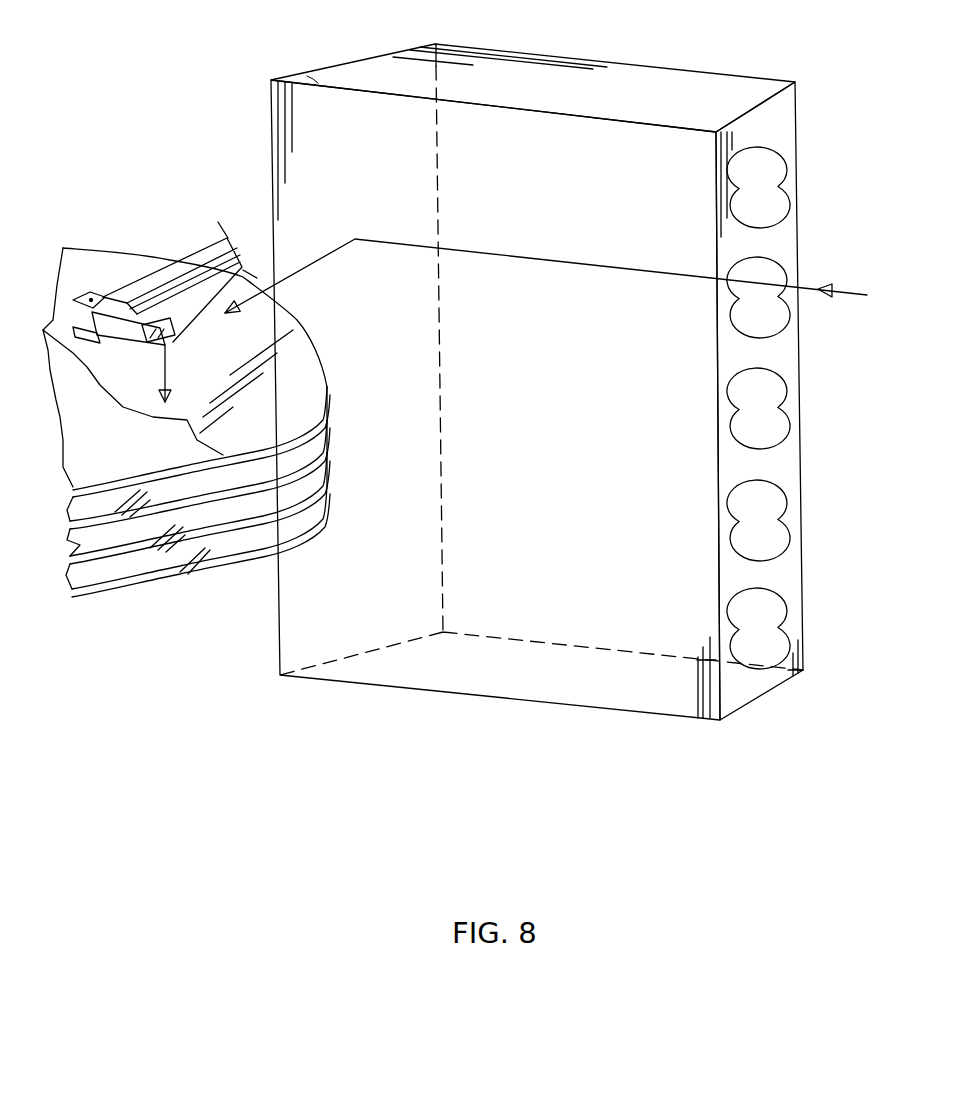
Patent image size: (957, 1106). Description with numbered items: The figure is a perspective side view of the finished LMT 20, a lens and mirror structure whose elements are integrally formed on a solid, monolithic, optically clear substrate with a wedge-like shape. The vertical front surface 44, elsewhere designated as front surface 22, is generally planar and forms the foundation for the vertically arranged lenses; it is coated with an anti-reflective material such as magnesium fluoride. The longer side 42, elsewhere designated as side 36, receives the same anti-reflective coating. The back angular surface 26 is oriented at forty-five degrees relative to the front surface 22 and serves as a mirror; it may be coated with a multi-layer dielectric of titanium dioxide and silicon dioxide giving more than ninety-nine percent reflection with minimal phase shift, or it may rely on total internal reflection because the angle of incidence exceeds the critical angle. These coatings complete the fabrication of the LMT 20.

The LMT 20 is at (580, 380).
The front surface 22 is at (793, 401).
The front surface 44 is at (785, 255).
The back angular surface 26 is at (362, 58).
The longer side 36 is at (495, 400).
The longer side 42 is at (495, 400).